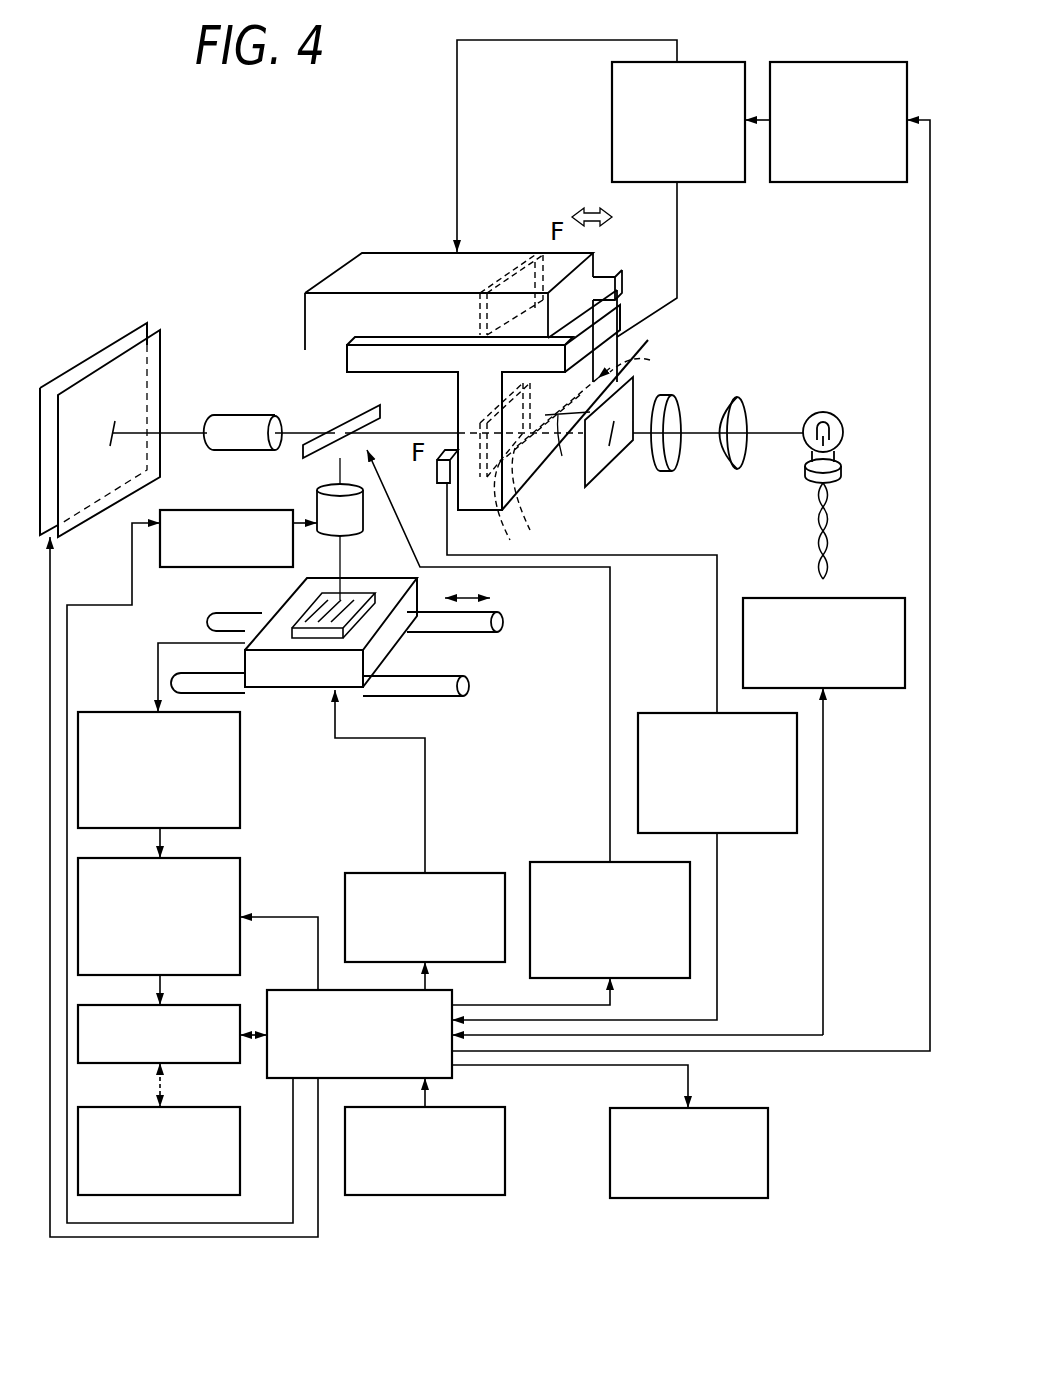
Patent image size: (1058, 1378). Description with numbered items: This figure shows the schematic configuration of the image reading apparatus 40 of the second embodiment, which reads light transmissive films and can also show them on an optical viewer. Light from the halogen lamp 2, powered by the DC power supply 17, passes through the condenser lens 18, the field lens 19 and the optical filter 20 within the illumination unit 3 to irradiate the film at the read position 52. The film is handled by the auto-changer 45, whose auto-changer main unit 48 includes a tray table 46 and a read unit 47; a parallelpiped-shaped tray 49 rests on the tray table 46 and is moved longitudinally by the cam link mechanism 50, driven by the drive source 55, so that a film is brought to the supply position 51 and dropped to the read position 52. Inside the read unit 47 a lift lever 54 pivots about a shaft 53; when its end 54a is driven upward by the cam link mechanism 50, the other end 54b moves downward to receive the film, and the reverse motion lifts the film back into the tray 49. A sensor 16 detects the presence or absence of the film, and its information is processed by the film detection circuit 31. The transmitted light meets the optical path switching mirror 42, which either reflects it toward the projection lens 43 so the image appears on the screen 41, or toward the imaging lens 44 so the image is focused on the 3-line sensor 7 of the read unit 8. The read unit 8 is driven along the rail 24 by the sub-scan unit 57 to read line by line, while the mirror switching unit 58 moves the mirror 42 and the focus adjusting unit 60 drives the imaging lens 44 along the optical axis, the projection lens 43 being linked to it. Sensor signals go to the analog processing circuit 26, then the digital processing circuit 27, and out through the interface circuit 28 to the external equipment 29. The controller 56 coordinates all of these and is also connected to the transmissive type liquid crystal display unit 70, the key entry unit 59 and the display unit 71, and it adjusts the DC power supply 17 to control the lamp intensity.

The halogen lamp 2 is at (834, 412).
The illumination unit 3 is at (698, 448).
The 3-line sensor 7 is at (347, 600).
The read unit 8 is at (398, 579).
The sensor 16 is at (437, 480).
The DC power supply 17 is at (876, 599).
The condenser lens 18 is at (744, 407).
The field lens 19 is at (679, 407).
The optical filter 20 is at (613, 474).
The rail 24 is at (470, 682).
The analog processing circuit 26 is at (240, 739).
The digital processing circuit 27 is at (240, 890).
The interface circuit 28 is at (228, 1005).
The external equipment 29 is at (234, 1127).
The film detection circuit 31 is at (680, 713).
The image reading apparatus 40 is at (230, 260).
The screen 41 is at (162, 362).
The optical path switching mirror 42 is at (289, 384).
The projection lens 43 is at (256, 415).
The imaging lens 44 is at (317, 499).
The auto-changer 45 is at (316, 266).
The tray table 46 is at (620, 290).
The read unit 47 is at (465, 414).
The auto-changer main unit 48 is at (455, 390).
The tray 49 is at (398, 258).
The cam link mechanism 50 is at (726, 62).
The supply position 51 is at (539, 248).
The read position 52 is at (482, 486).
The shaft 53 is at (562, 457).
The lift lever 54 is at (548, 519).
The end of the lift lever 54a is at (642, 357).
The end of the lift lever 54b is at (537, 539).
The drive source 55 is at (886, 62).
The controller 56 is at (452, 998).
The sub-scan unit 57 is at (478, 873).
The mirror switching unit 58 is at (572, 862).
The key entry unit 59 is at (507, 1127).
The focus adjusting unit 60 is at (238, 510).
The transmissive type liquid crystal display unit 70 is at (114, 345).
The display unit 71 is at (770, 1127).